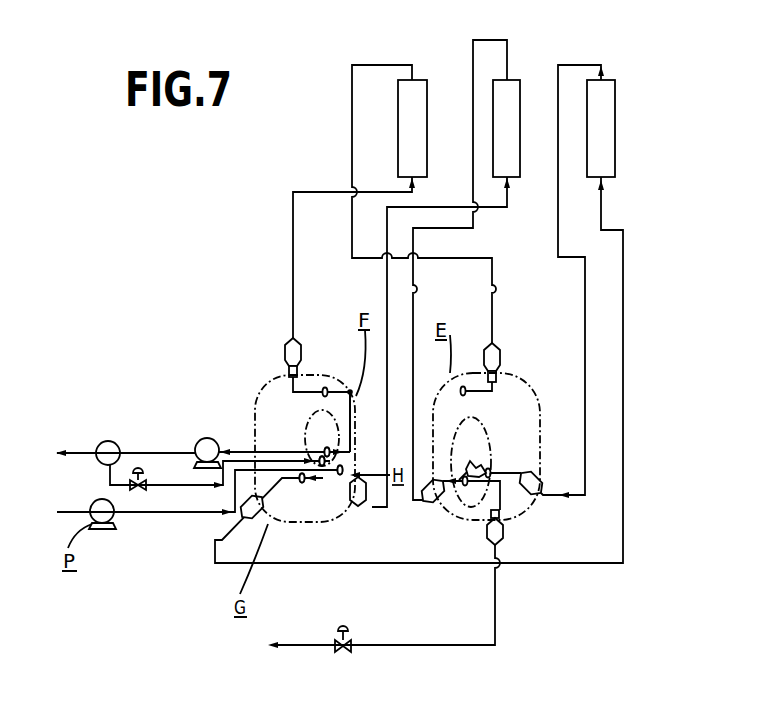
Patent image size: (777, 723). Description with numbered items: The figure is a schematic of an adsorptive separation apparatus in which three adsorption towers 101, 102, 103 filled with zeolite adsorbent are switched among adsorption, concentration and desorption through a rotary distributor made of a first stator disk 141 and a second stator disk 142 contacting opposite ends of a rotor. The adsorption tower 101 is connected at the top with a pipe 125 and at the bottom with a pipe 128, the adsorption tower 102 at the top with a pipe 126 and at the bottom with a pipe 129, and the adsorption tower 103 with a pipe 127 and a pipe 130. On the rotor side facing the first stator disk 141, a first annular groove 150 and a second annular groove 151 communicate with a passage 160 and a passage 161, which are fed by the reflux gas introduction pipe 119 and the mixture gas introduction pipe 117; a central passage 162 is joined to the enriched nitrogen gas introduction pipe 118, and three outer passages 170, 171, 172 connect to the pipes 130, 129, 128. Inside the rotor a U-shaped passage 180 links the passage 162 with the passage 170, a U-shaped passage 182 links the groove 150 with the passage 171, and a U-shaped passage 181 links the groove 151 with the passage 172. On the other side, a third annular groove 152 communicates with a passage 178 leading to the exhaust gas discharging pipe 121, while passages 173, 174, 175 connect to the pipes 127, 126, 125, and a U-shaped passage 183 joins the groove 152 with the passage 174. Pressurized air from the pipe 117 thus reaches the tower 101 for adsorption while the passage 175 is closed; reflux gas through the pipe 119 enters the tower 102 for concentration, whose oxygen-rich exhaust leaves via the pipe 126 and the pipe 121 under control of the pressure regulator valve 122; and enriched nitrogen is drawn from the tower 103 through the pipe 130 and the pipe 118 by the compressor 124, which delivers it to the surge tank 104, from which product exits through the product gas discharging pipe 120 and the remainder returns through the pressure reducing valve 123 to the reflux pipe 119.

The adsorption tower 101 is at (520, 143).
The adsorption tower 102 is at (617, 103).
The adsorption tower 103 is at (427, 123).
The surge tank 104 is at (106, 440).
The mixture gas introduction pipe 117 is at (170, 512).
The enriched nitrogen gas introduction pipe 118 is at (200, 439).
The reflux gas introduction pipe 119 is at (197, 487).
The product gas discharging pipe 120 is at (87, 452).
The exhaust gas discharging pipe 121 is at (462, 642).
The pressure regulator valve 122 is at (352, 628).
The pressure reducing valve 123 is at (138, 450).
The compressor 124 is at (138, 472).
The pipe 125 is at (507, 55).
The pipe 126 is at (587, 63).
The pipe 127 is at (393, 63).
The pipe 128 is at (510, 193).
The pipe 129 is at (603, 198).
The pipe 130 is at (415, 183).
The first stator disk 141 is at (262, 373).
The second stator disk 142 is at (530, 500).
The first annular groove 150 is at (325, 440).
The second annular groove 151 is at (320, 425).
The third annular groove 152 is at (503, 400).
The passage 160 is at (318, 458).
The passage 161 is at (316, 472).
The passage 162 is at (323, 450).
The passage 170 is at (325, 387).
The passage 171 is at (246, 518).
The passage 172 is at (352, 508).
The passage 173 is at (466, 386).
The passage 174 is at (525, 476).
The passage 175 is at (440, 473).
The passage 178 is at (448, 486).
The U-shaped passage 180 is at (350, 388).
The U-shaped passage 181 is at (360, 450).
The U-shaped passage 182 is at (302, 484).
The U-shaped passage 183 is at (478, 462).